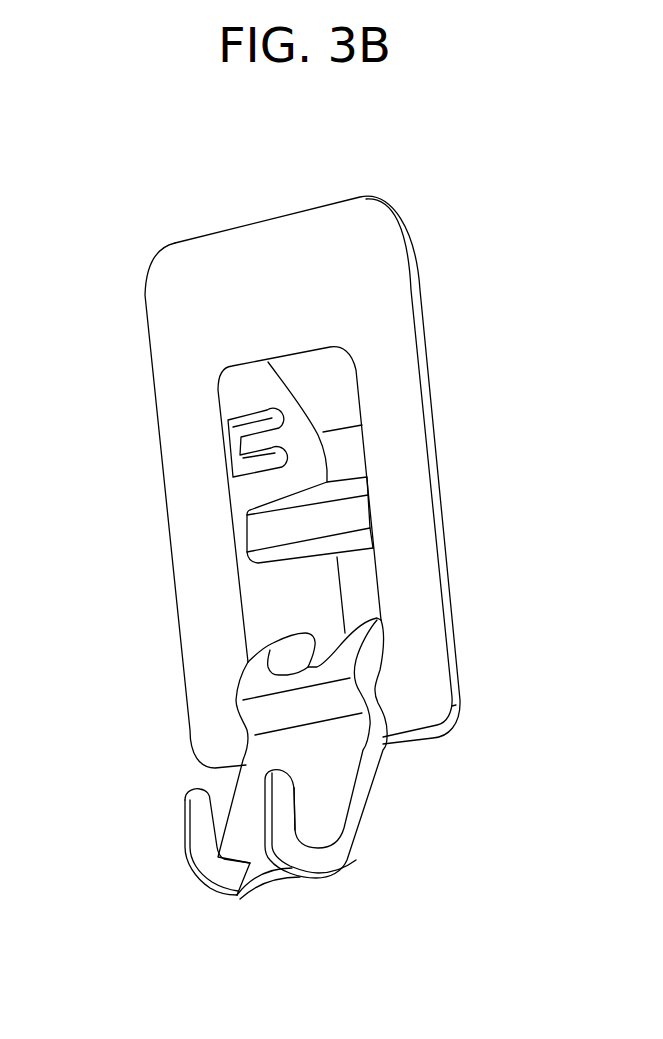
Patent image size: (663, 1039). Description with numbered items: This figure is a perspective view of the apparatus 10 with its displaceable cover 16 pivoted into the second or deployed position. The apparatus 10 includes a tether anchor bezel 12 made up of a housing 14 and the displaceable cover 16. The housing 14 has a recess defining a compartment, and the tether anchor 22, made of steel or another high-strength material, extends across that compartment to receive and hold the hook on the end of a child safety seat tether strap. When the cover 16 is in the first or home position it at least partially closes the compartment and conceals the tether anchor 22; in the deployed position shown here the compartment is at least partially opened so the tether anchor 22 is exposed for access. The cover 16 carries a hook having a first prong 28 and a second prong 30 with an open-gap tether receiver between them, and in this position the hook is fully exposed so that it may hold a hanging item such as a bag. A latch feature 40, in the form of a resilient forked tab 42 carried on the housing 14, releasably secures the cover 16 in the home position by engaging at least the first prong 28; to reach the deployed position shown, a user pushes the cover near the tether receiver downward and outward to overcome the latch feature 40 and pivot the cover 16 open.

The apparatus 10 is at (118, 207).
The tether anchor bezel 12 is at (462, 400).
The housing 14 is at (397, 455).
The displaceable cover 16 is at (386, 821).
The tether anchor 22 is at (285, 530).
The first prong 28 is at (183, 820).
The second prong 30 is at (292, 800).
The latch feature 40 is at (304, 402).
The resilient forked tab 42 is at (255, 427).